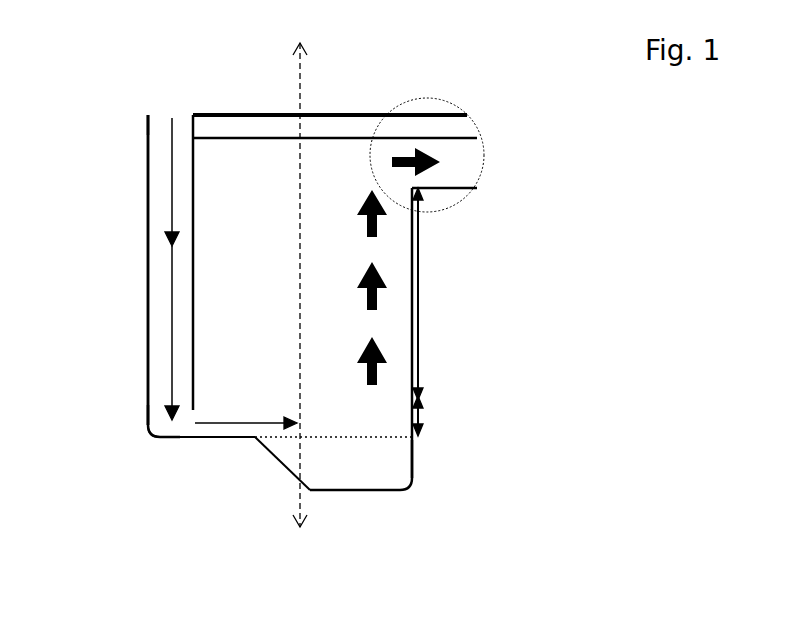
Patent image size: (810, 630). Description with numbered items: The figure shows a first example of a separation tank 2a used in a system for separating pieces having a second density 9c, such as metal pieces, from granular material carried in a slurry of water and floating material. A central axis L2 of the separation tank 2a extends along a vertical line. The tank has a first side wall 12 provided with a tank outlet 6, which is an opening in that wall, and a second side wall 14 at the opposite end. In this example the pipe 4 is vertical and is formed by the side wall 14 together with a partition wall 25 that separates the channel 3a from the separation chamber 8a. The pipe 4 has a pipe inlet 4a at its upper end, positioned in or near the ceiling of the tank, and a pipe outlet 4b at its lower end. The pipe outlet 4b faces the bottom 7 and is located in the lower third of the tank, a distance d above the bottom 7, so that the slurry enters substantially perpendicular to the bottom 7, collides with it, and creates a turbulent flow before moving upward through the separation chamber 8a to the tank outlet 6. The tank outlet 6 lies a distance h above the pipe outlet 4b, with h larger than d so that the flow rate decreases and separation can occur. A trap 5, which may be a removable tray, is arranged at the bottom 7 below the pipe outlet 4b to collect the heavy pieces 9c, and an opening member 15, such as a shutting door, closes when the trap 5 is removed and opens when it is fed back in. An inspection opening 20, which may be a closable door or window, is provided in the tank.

The separation tank 2a is at (345, 110).
The inspection opening 20 is at (282, 115).
The partition wall 25 is at (193, 232).
The second side wall 14 is at (148, 235).
The pipe 4 is at (163, 303).
The pipe inlet 4a is at (162, 117).
The pipe outlet 4b is at (160, 412).
The channel 3a is at (188, 268).
The separation chamber 8a is at (277, 322).
The tank outlet 6 is at (430, 145).
The first side wall 12 is at (418, 334).
The distance h is at (428, 294).
The distance d is at (428, 414).
The trap 5 is at (400, 476).
The opening member 15 is at (373, 438).
The bottom 7 is at (228, 437).
The pieces having the second density 9c is at (388, 470).
The central axis L2 is at (307, 266).